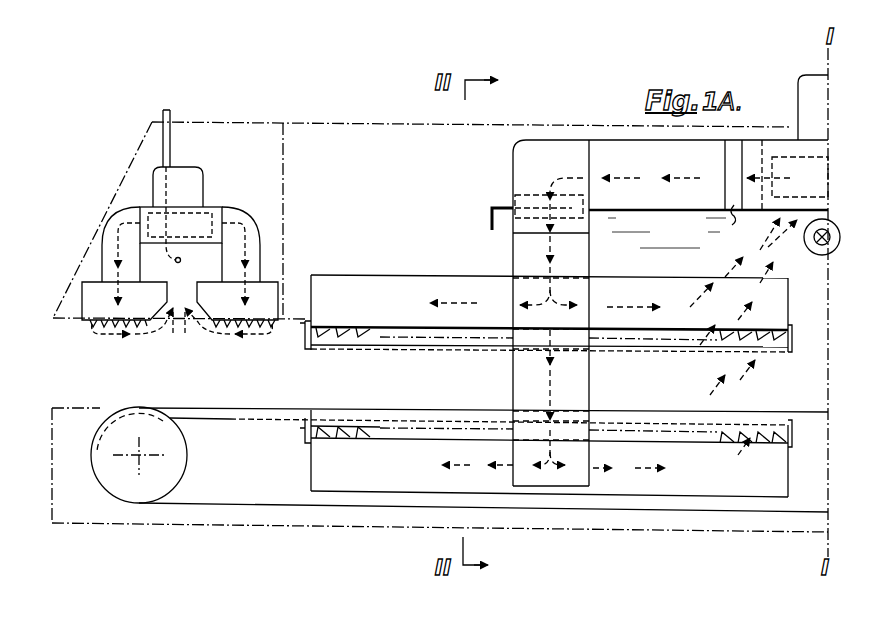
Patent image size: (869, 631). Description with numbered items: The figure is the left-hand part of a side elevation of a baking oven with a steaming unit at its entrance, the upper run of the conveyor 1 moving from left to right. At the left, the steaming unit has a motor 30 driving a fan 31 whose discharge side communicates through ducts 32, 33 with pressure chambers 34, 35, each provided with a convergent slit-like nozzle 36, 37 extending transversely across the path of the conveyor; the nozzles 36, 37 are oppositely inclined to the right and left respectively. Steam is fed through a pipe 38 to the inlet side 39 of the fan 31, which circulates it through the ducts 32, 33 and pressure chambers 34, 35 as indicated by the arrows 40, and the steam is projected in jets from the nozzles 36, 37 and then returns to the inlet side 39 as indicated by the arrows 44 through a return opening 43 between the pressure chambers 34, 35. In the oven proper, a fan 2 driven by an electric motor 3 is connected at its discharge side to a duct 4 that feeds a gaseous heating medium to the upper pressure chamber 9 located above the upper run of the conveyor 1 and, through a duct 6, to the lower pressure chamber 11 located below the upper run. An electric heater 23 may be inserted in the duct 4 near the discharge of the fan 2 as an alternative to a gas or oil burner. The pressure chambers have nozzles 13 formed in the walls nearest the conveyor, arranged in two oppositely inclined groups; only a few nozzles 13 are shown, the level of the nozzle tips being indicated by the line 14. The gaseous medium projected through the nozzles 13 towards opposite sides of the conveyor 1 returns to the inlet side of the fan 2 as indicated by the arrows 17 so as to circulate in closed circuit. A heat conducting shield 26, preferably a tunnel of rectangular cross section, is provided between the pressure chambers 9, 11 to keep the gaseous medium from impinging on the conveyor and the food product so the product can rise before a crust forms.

The conveyor 1 is at (213, 408).
The fan 2 is at (810, 167).
The electric motor 3 is at (800, 80).
The duct 4 is at (625, 157).
The duct 6 is at (583, 253).
The upper pressure chamber 9 is at (638, 287).
The lower pressure chamber 11 is at (677, 485).
The nozzle 13 is at (347, 333).
The line of nozzle tips 14 is at (423, 428).
The arrow 17 is at (760, 238).
The electric heater 23 is at (732, 155).
The heat conducting shield 26 is at (632, 423).
The motor 30 is at (190, 173).
The fan 31 is at (203, 217).
The duct 32 is at (115, 225).
The duct 33 is at (238, 222).
The pressure chamber 34 is at (93, 300).
The pressure chamber 35 is at (267, 292).
The slit-like nozzle 36 is at (95, 325).
The slit-like nozzle 37 is at (237, 325).
The steam pipe 38 is at (167, 110).
The fan inlet side 39 is at (187, 243).
The arrow 40 is at (120, 267).
The return opening 43 is at (177, 292).
The arrow 44 is at (185, 334).